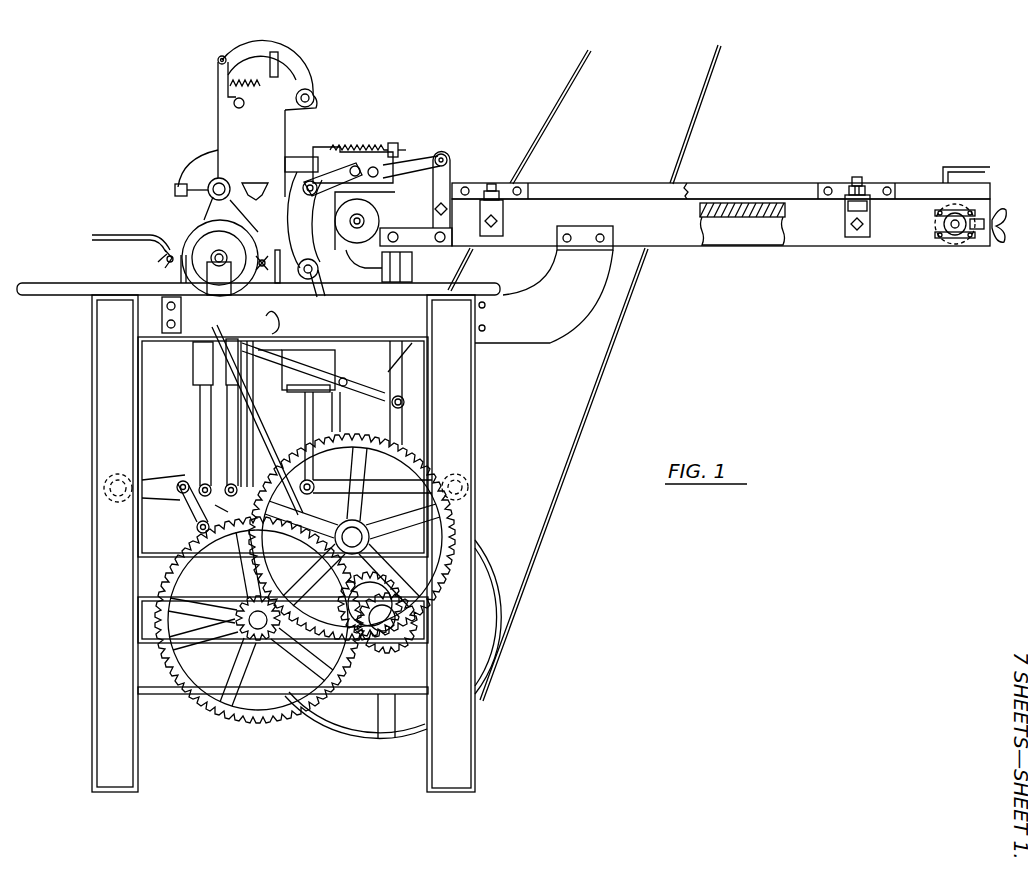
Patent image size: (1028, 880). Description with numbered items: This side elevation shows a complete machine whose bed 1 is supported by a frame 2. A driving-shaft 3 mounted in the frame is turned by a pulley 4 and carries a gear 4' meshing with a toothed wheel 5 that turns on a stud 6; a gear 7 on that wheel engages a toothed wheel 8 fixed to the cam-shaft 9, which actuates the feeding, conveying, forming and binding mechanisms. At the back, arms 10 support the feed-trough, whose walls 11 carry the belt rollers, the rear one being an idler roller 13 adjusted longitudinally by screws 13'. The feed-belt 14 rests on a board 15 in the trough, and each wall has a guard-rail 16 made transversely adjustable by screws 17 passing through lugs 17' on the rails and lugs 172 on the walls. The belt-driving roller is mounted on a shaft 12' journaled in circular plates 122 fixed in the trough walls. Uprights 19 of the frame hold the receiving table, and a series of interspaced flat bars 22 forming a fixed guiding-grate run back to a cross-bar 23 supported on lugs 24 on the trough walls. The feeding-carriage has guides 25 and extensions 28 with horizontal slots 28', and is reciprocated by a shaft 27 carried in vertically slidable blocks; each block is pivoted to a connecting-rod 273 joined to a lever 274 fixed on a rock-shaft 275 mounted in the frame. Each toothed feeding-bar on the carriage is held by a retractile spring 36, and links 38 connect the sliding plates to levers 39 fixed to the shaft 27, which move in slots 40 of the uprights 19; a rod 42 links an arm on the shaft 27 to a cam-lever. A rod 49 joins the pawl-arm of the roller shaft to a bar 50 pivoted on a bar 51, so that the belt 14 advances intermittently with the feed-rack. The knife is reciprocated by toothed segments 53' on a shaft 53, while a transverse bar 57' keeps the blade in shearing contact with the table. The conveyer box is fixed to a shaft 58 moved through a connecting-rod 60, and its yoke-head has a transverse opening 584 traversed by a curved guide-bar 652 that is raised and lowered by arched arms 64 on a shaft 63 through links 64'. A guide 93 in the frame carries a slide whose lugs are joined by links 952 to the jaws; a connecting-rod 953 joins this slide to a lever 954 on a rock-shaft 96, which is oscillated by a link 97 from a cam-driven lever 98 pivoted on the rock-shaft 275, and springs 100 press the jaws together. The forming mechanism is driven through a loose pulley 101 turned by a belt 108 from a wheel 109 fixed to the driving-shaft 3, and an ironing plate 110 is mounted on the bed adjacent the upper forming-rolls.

The bed 1 is at (63, 296).
The frame 2 is at (99, 388).
The driving-shaft 3 is at (365, 610).
The pulley 4 is at (393, 647).
The gear 4' is at (400, 640).
The toothed wheel 5 is at (195, 695).
The stud 6 is at (252, 614).
The gear 7 is at (262, 634).
The toothed wheel 8 is at (453, 518).
The cam-shaft 9 is at (362, 539).
The arms 10 is at (570, 312).
The walls 11 is at (812, 240).
The shaft 12' is at (374, 220).
The circular plates 122 is at (388, 236).
The roller 13 is at (975, 244).
The screws 13' is at (1010, 208).
The feed-belt 14 is at (762, 200).
The board 15 is at (722, 218).
The guard-rail 16 is at (592, 190).
The screws 17 is at (879, 182).
The lugs 17' is at (846, 165).
The lugs 172 is at (868, 212).
The uprights 19 is at (217, 122).
The flat bars 22 is at (412, 160).
The cross-bar 23 is at (445, 157).
The lugs 24 is at (441, 182).
The guides 25 is at (322, 350).
The shaft 27 is at (313, 281).
The connecting-rod 273 is at (312, 430).
The lever 274 is at (372, 484).
The rock-shaft 275 is at (470, 480).
The extensions 28 is at (320, 134).
The horizontal slots 28' is at (296, 384).
The retractile spring 36 is at (385, 148).
The links 38 is at (366, 148).
The levers 39 is at (297, 221).
The slots 40 is at (322, 246).
The rod 42 is at (431, 380).
The rod 49 is at (412, 270).
The bar 50 is at (318, 340).
The bar 51 is at (345, 412).
The shaft 53 is at (196, 96).
The toothed segments 53' is at (210, 72).
The transverse bar 57' is at (260, 160).
The shaft 58 is at (223, 183).
The transverse opening 584 is at (175, 190).
The connecting-rod 60 is at (228, 434).
The shaft 63 is at (313, 97).
The arched arms 64 is at (284, 72).
The links 64' is at (211, 49).
The curved guide-bar 652 is at (179, 166).
The guide 93 is at (195, 365).
The links 952 is at (162, 302).
The connecting-rod 953 is at (240, 410).
The lever 954 is at (150, 486).
The rock-shaft 96 is at (108, 497).
The link 97 is at (192, 520).
The lever 98 is at (240, 522).
The springs 100 is at (163, 259).
The driving-pulley 101 is at (200, 234).
The belt 108 is at (254, 320).
The wheel 109 is at (405, 638).
The ironing table or plate 110 is at (107, 232).